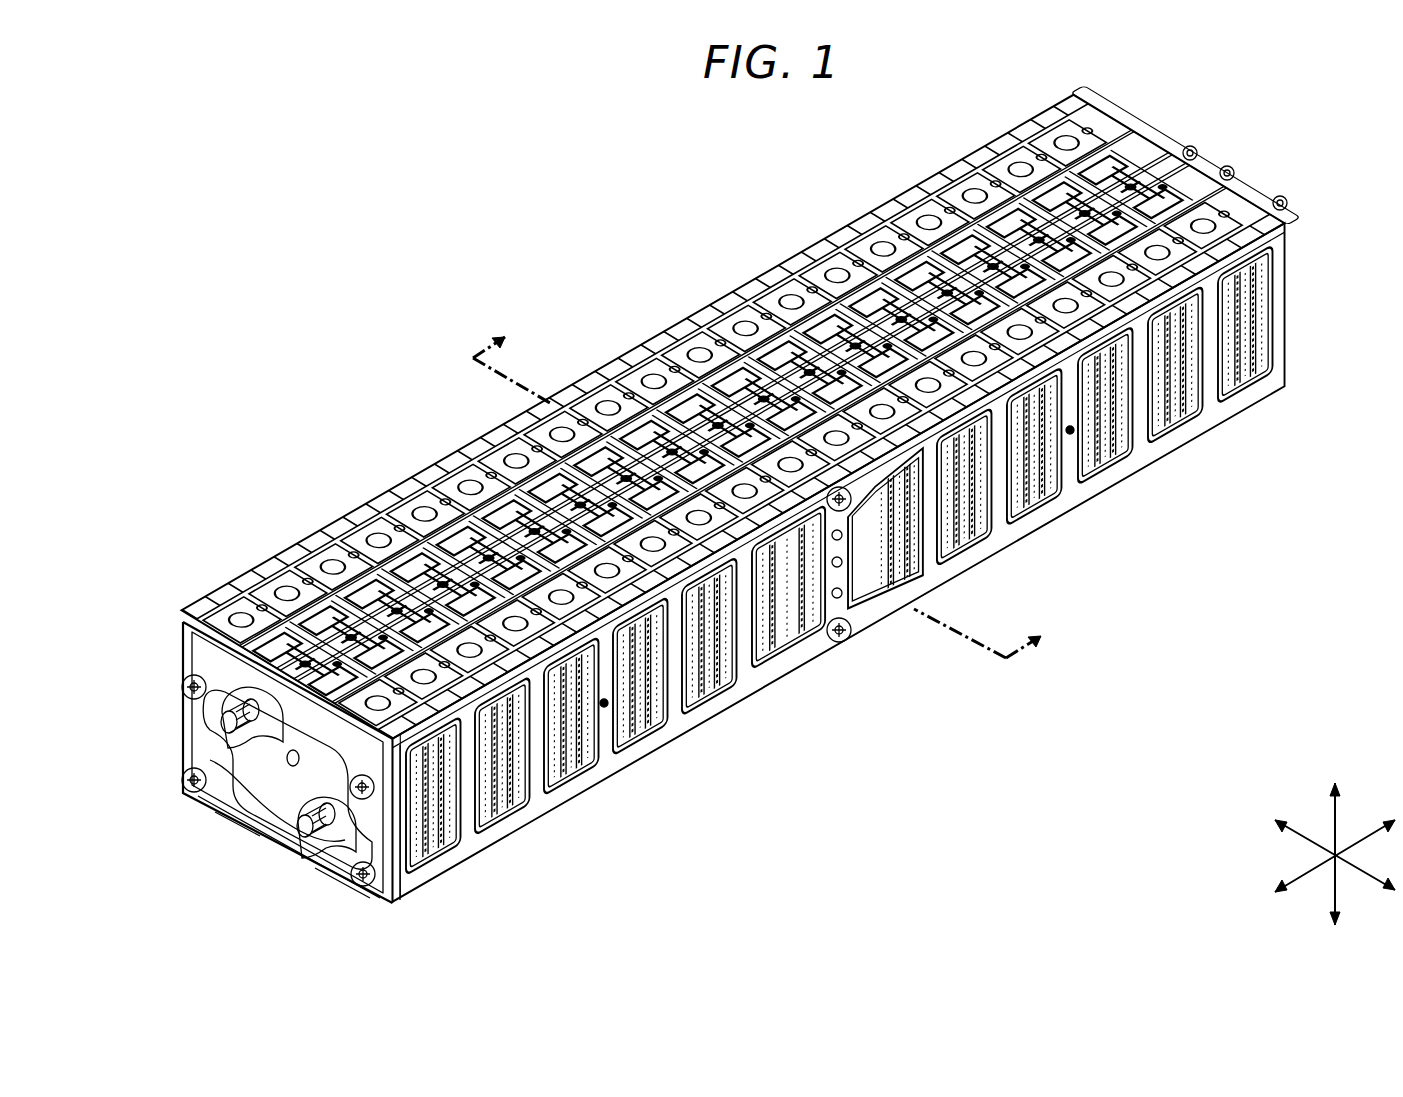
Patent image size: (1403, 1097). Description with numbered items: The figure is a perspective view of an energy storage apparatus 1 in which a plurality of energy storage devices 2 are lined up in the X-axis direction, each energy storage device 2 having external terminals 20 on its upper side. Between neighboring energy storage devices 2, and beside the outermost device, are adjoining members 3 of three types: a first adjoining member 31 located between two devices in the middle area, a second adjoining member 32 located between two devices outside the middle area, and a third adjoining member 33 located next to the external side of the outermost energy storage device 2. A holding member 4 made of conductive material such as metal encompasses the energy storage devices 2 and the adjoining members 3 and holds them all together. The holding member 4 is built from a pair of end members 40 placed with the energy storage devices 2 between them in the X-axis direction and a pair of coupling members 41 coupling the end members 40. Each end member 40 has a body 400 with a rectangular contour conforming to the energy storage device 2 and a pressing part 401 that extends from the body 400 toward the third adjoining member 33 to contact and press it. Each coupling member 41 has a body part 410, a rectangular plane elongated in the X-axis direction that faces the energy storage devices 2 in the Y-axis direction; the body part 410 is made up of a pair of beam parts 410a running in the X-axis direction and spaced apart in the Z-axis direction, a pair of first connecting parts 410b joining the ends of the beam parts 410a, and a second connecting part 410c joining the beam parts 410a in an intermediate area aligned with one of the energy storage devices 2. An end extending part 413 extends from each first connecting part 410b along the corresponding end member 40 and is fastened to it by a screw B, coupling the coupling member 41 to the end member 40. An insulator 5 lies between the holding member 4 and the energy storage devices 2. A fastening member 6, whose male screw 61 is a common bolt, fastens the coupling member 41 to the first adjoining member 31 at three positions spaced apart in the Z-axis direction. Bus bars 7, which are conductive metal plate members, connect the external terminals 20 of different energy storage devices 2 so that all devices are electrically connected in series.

The energy storage apparatus 1 is at (778, 220).
The energy storage device 2 is at (593, 770).
The adjoining member 3 is at (1012, 459).
The first adjoining member 31 is at (788, 587).
The second adjoining member 32 is at (1175, 365).
The third adjoining member 33 is at (1245, 324).
The holding member 4 is at (300, 935).
The end member 40 is at (277, 822).
The coupling member 41 is at (383, 903).
The body 400 is at (252, 802).
The pressing part 401 is at (253, 753).
The insulator 5 is at (1058, 120).
The fastening member 6 is at (943, 622).
The male screw 61 is at (854, 499).
The bus bar 7 is at (442, 500).
The external terminal 20 is at (502, 756).
The body part 410 is at (524, 834).
The beam part 410a is at (999, 466).
The first connecting part 410b is at (664, 661).
The second connecting part 410c is at (838, 560).
The end extending part 413 is at (283, 786).
The screw B is at (185, 687).